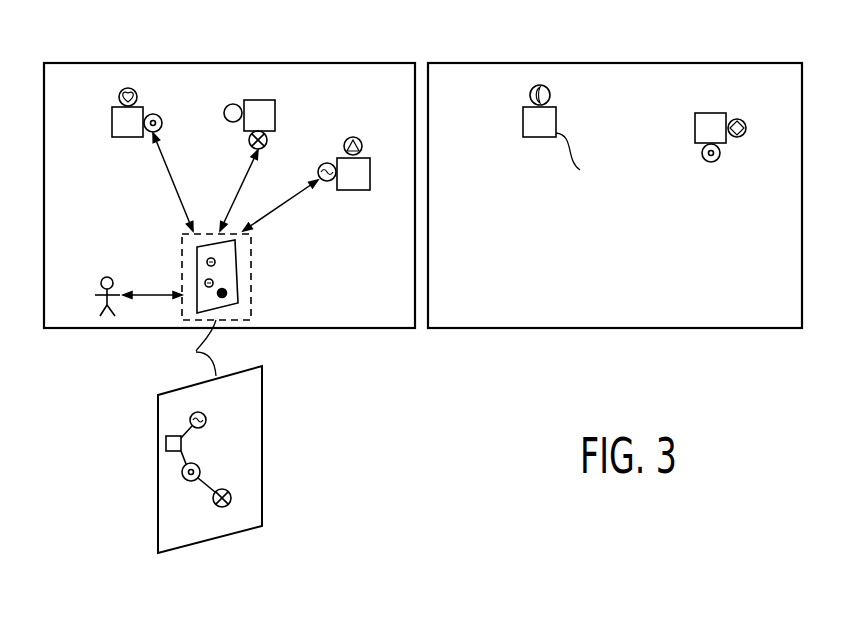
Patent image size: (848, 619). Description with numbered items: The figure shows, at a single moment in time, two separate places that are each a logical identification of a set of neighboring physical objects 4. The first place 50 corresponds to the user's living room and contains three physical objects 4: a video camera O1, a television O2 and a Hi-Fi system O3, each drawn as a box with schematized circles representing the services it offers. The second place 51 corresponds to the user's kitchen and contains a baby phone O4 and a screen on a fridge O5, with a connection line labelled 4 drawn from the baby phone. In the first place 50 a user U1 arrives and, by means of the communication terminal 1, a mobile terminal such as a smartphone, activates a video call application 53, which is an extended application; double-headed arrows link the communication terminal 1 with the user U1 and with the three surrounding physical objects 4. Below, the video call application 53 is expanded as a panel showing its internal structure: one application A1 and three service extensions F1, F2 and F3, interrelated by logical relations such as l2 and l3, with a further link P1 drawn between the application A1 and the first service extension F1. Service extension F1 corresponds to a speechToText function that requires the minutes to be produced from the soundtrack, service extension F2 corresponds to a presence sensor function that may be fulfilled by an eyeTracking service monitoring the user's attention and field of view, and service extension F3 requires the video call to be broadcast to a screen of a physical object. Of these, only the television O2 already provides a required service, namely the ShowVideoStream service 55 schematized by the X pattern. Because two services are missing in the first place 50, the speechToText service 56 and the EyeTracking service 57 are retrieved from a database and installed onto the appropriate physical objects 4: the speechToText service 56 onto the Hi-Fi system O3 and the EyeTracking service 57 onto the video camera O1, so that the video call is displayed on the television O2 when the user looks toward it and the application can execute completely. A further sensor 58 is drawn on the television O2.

The first place 50 is at (91, 63).
The second place 51 is at (628, 63).
The EyeTracking service 57 is at (156, 114).
The sensor of second object 58 is at (234, 104).
The ShowVideoStream service 55 is at (268, 140).
The speechToText service 56 is at (325, 183).
The communication terminal 1 is at (252, 303).
The video call application 53 is at (215, 436).
The physical objects 4 is at (574, 160).
The video camera O1 is at (117, 86).
The television O2 is at (270, 78).
The Hi-Fi system O3 is at (340, 192).
The baby phone O4 is at (523, 124).
The screen on a fridge O5 is at (705, 113).
The user U1 is at (106, 276).
The first link P1 is at (168, 436).
The application A1 is at (166, 443).
The logical relation l2 is at (183, 458).
The logical relation l3 is at (198, 486).
The service extension F1 is at (203, 411).
The service extension F2 is at (198, 463).
The service extension F3 is at (232, 499).